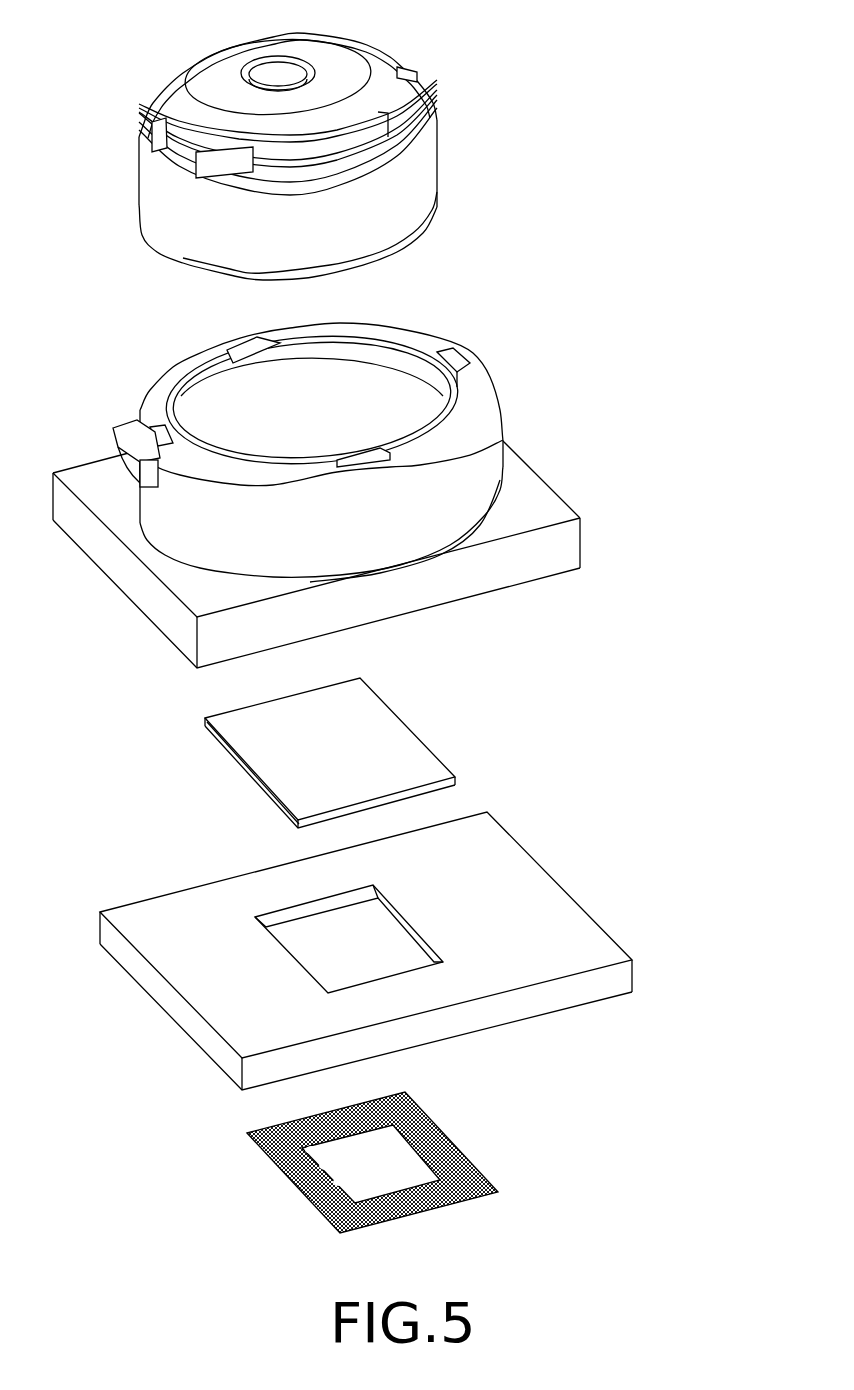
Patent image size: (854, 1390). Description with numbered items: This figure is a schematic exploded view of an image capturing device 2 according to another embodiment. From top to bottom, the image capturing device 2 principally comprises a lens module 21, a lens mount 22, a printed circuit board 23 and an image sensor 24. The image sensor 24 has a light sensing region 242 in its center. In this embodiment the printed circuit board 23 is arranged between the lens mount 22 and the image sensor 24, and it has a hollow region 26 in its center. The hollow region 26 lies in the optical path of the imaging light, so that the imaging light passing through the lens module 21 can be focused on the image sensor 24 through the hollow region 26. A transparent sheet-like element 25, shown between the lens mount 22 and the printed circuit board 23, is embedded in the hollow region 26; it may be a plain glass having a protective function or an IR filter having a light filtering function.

The image capturing device 2 is at (675, 60).
The lens module 21 is at (340, 62).
The lens mount 22 is at (480, 465).
The printed circuit board 23 is at (366, 951).
The image sensor 24 is at (393, 1169).
The transparent sheet-like element 25 is at (377, 743).
The hollow region 26 is at (317, 935).
The light sensing region 242 is at (335, 1165).